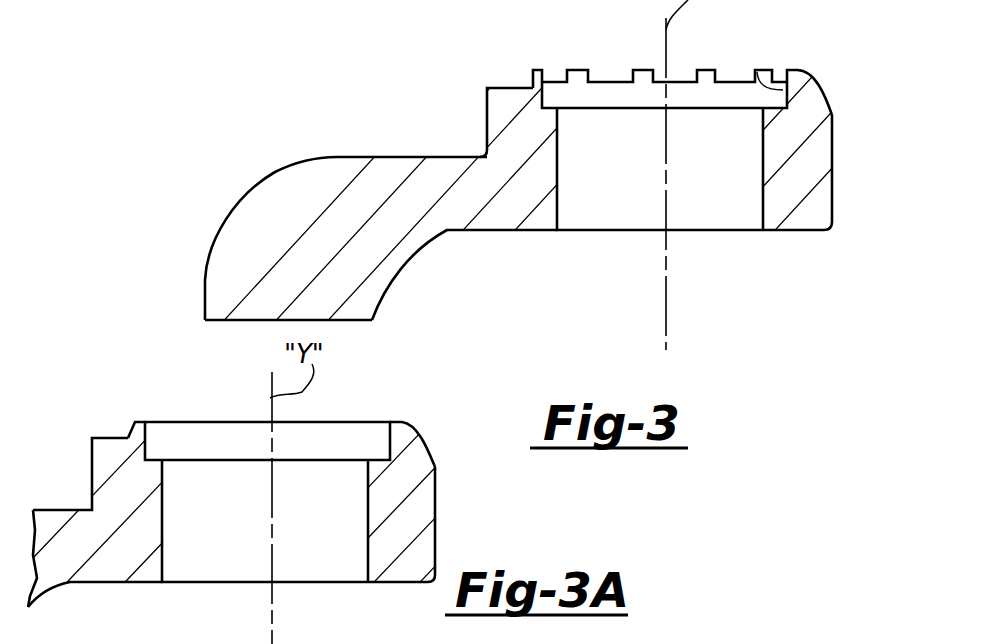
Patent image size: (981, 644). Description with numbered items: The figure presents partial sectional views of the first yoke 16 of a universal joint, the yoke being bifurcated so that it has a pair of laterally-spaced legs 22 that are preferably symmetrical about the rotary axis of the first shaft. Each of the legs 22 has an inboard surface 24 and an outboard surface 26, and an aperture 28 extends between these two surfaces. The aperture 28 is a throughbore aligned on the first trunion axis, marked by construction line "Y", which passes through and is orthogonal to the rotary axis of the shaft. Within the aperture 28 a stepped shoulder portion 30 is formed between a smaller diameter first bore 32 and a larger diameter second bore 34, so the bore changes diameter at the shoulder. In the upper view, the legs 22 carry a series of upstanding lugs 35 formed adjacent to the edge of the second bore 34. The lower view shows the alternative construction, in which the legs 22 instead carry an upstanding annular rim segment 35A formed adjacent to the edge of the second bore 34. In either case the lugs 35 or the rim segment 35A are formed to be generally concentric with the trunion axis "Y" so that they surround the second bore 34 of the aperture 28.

In FIG. 3, the first yoke 16 is at (278, 163).
In FIG. 3, the legs 22 is at (828, 136).
In FIG. 3A, the legs 22 is at (436, 481).
In FIG. 3, the inboard surface 24 is at (447, 232).
In FIG. 3A, the inboard surface 24 is at (88, 582).
In FIG. 3, the outboard surface 26 is at (512, 88).
In FIG. 3A, the outboard surface 26 is at (112, 438).
In FIG. 3, the aperture 28 is at (715, 165).
In FIG. 3A, the aperture 28 is at (325, 521).
In FIG. 3, the stepped shoulder portion 30 is at (548, 106).
In FIG. 3A, the stepped shoulder portion 30 is at (155, 460).
In FIG. 3, the first bore 32 is at (763, 206).
In FIG. 3A, the first bore 32 is at (368, 555).
In FIG. 3, the second bore 34 is at (757, 70).
In FIG. 3A, the second bore 34 is at (392, 436).
In FIG. 3, the upstanding lugs 35 is at (540, 69).
In FIG. 3A, the upstanding annular rim segment 35A is at (142, 422).